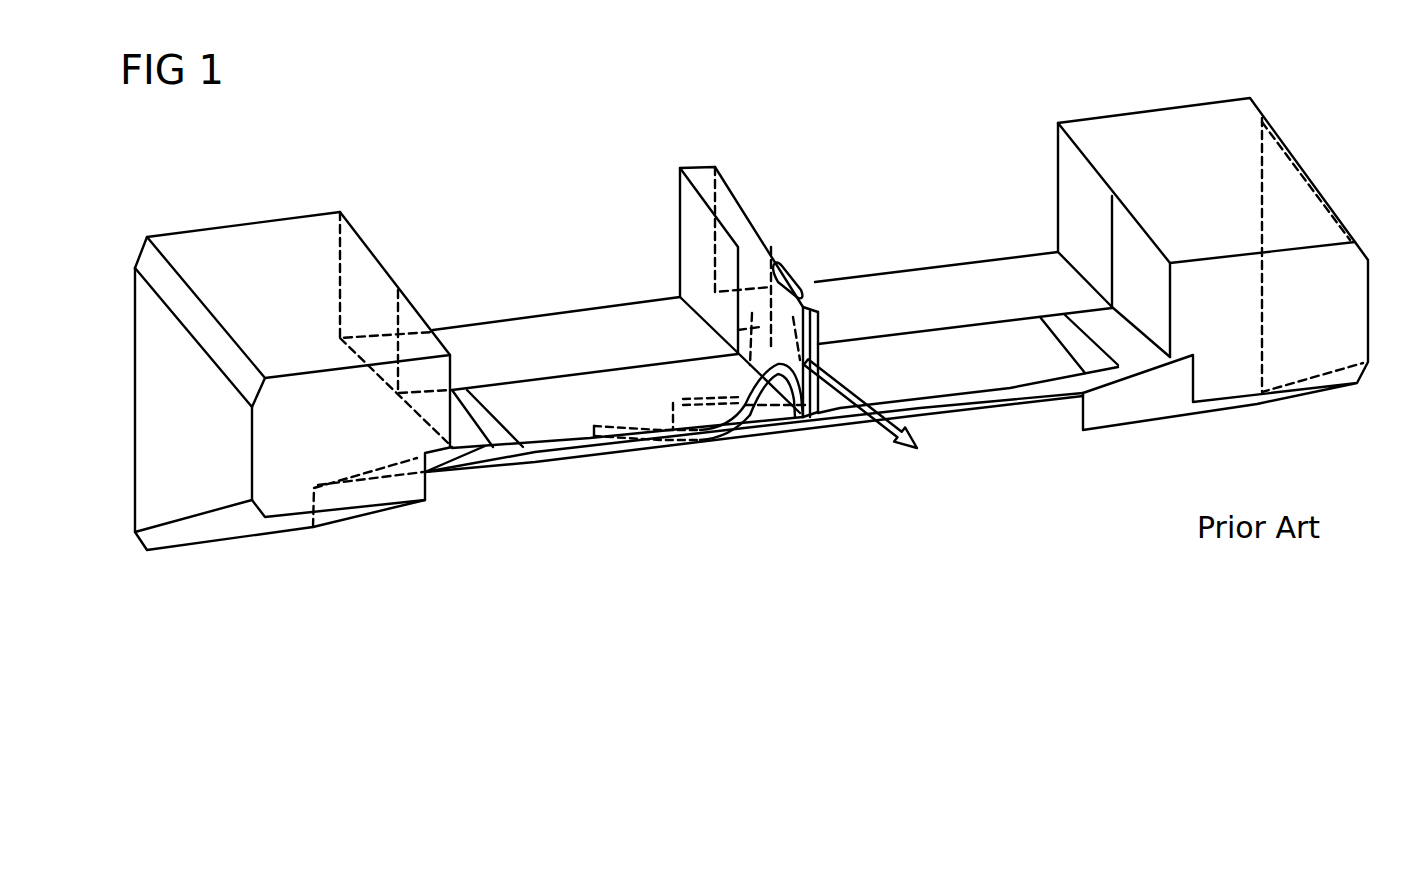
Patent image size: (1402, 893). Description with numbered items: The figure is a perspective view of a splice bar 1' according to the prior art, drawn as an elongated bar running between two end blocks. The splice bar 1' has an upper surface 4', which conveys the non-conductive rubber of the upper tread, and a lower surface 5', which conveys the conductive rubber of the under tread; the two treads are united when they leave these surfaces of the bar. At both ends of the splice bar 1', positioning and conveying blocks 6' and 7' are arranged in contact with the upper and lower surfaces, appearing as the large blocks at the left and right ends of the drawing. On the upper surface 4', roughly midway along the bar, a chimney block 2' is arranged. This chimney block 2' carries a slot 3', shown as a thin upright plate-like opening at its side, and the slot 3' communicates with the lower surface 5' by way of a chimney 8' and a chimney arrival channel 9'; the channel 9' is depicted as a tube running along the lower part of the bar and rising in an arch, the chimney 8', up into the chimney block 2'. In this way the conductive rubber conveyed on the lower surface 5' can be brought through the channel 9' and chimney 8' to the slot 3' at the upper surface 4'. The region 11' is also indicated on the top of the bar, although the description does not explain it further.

The splice bar 1' is at (751, 302).
The chimney block 2' is at (731, 258).
The slot 3' is at (860, 377).
The upper surface 4' is at (785, 383).
The lower surface 5' is at (754, 455).
The positioning and conveying block 6' is at (293, 359).
The positioning and conveying block 7' is at (1213, 242).
The chimney 8' is at (787, 371).
The chimney arrival channel 9' is at (672, 407).
The beam top surface 11' is at (772, 304).